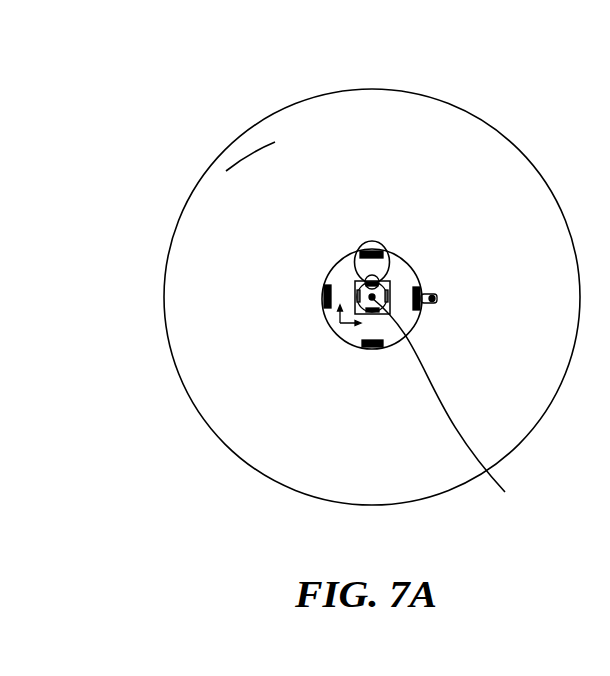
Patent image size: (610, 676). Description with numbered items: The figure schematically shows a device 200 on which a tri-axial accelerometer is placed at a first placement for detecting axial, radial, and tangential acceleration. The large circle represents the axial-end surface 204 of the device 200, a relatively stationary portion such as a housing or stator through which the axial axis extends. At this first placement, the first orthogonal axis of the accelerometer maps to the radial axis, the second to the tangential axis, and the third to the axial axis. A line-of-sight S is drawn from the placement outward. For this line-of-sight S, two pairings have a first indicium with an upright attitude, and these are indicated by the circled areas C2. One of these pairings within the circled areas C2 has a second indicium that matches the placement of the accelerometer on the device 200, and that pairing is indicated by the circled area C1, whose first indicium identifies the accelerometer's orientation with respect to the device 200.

The device 200 is at (418, 92).
The axial-end surface 204 is at (250, 150).
The circled area C1 is at (372, 298).
The circled areas C2 is at (365, 243).
The line-of-sight S is at (447, 406).